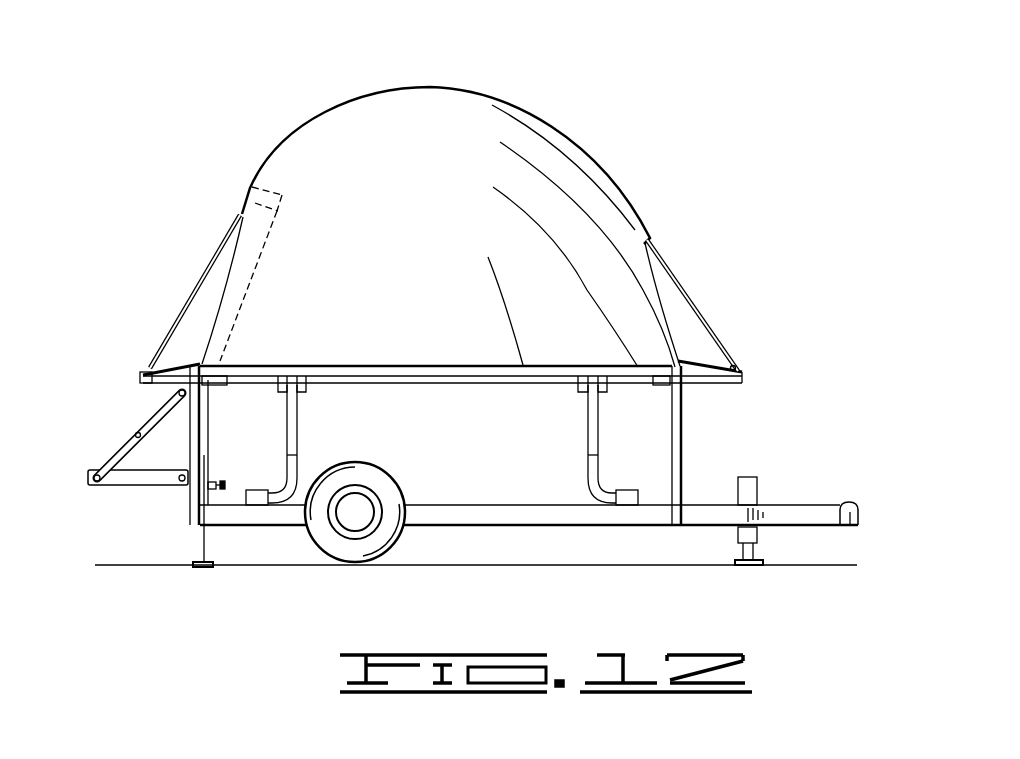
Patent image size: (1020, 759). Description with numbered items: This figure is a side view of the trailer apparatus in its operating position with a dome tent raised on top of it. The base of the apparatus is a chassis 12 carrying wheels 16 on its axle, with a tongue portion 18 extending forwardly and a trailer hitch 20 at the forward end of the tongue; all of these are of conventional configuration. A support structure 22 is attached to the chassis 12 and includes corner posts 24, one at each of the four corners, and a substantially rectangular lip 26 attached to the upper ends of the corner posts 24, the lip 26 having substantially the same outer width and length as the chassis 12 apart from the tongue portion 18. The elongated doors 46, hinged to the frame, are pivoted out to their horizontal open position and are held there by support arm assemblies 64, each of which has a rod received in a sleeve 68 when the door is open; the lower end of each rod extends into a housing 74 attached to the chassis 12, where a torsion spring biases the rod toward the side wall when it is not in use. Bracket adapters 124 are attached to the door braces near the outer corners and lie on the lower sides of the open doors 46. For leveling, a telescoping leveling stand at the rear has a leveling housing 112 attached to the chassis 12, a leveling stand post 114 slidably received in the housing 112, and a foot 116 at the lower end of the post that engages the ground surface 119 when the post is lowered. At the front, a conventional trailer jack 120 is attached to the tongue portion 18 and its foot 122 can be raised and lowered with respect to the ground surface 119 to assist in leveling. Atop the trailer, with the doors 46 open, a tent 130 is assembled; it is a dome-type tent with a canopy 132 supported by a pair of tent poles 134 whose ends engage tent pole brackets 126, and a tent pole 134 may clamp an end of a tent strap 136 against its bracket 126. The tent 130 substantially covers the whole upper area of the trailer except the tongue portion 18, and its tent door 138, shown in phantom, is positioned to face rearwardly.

The chassis 12 is at (422, 513).
The wheels 16 is at (367, 552).
The tongue portion 18 is at (810, 505).
The trailer hitch 20 is at (850, 505).
The support structure 22 is at (424, 445).
The corner posts 24 is at (190, 447).
The lip 26 is at (430, 384).
The doors 46 is at (382, 370).
The support arm assemblies 64 is at (312, 420).
The sleeve 68 is at (296, 422).
The housing 74 is at (258, 505).
The leveling housing 112 is at (203, 487).
The leveling stand post 114 is at (201, 546).
The foot 116 is at (201, 567).
The ground surface 119 is at (727, 540).
The trailer jack 120 is at (760, 530).
The foot 122 is at (745, 565).
The bracket adapter 124 is at (222, 382).
The tent pole brackets 126 is at (143, 380).
The tent 130 is at (451, 214).
The canopy 132 is at (538, 153).
The tent poles 134 is at (672, 262).
The tent strap 136 is at (178, 357).
The tent door 138 is at (250, 190).